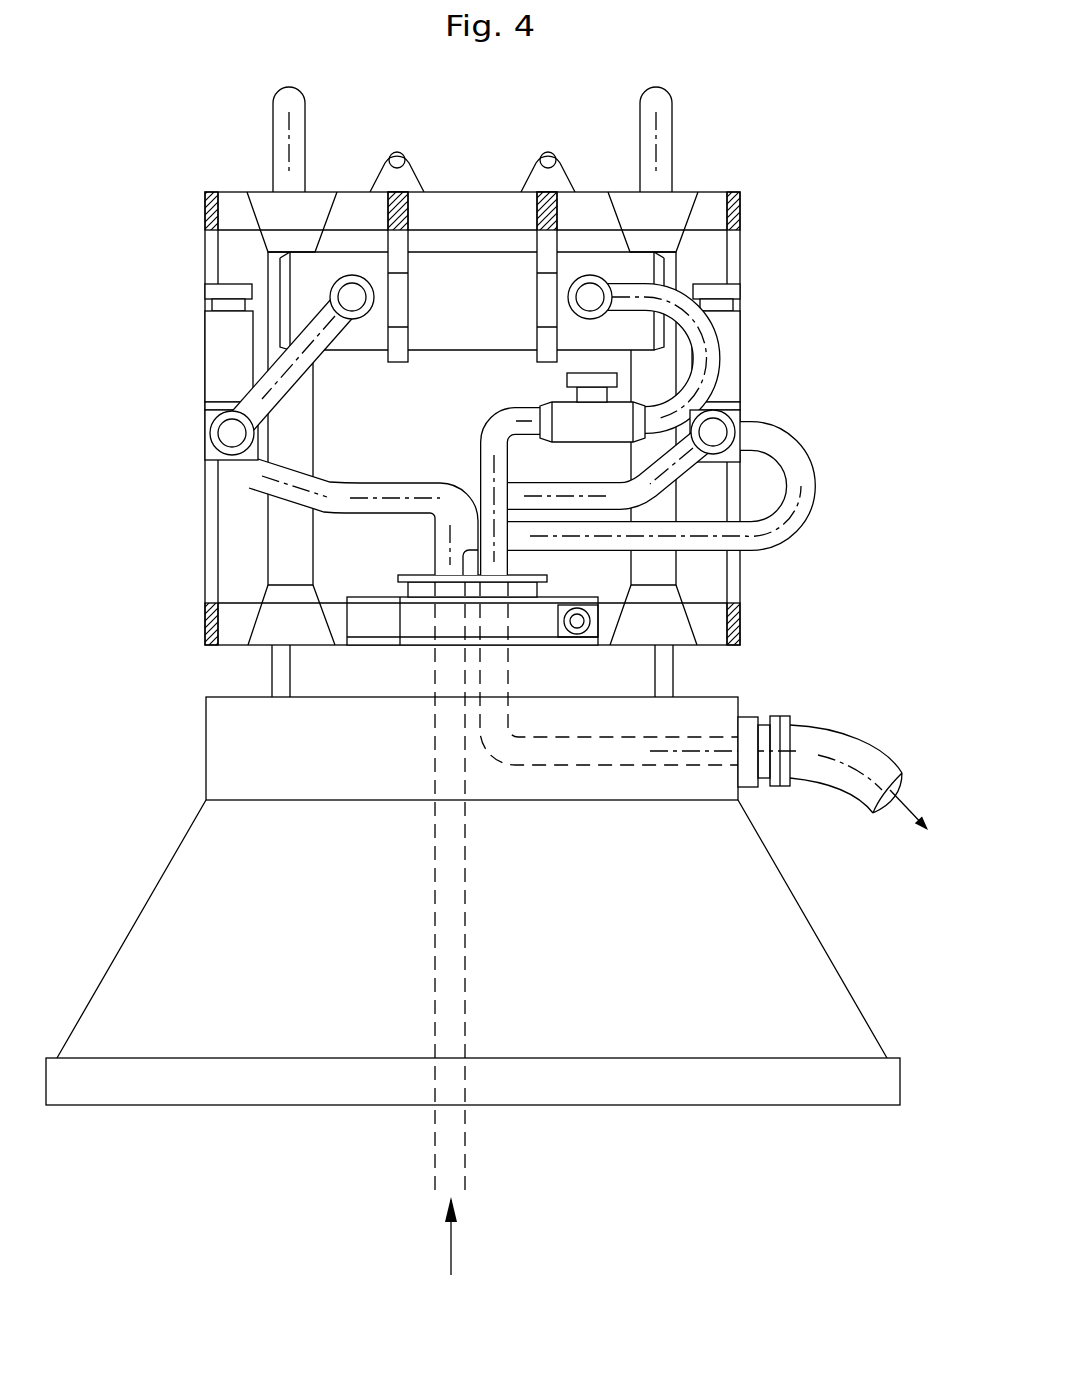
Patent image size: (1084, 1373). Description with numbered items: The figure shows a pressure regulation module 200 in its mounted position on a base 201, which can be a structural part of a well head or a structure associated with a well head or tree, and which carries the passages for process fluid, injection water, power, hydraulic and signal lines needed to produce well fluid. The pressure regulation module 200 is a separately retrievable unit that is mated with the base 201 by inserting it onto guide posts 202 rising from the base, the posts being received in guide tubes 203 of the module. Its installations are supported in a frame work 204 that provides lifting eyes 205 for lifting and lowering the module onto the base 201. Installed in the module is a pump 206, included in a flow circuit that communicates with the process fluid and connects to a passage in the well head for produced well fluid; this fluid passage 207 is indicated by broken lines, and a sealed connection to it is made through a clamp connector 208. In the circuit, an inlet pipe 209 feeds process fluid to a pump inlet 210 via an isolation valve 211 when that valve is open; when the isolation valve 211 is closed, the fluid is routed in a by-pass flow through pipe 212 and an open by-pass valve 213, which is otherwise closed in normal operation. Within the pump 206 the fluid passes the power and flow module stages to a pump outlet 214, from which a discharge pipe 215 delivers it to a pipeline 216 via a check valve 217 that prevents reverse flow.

The pressure regulation module 200 is at (804, 160).
The base 201 is at (814, 923).
The guide posts 202 is at (273, 124).
The guide tubes 203 is at (275, 545).
The frame work 204 is at (741, 207).
The lifting eyes 205 is at (540, 157).
The pump 206 is at (489, 309).
The fluid passage 207 is at (434, 847).
The clamp connector 208 is at (383, 596).
The inlet pipe 209 is at (289, 394).
The pump inlet 210 is at (345, 308).
The isolation valve 211 is at (210, 362).
The by-pass pipe 212 is at (590, 482).
The by-pass valve 213 is at (733, 366).
The pump outlet 214 is at (594, 300).
The discharge pipe 215 is at (483, 475).
The pipeline 216 is at (847, 737).
The check valve 217 is at (555, 400).